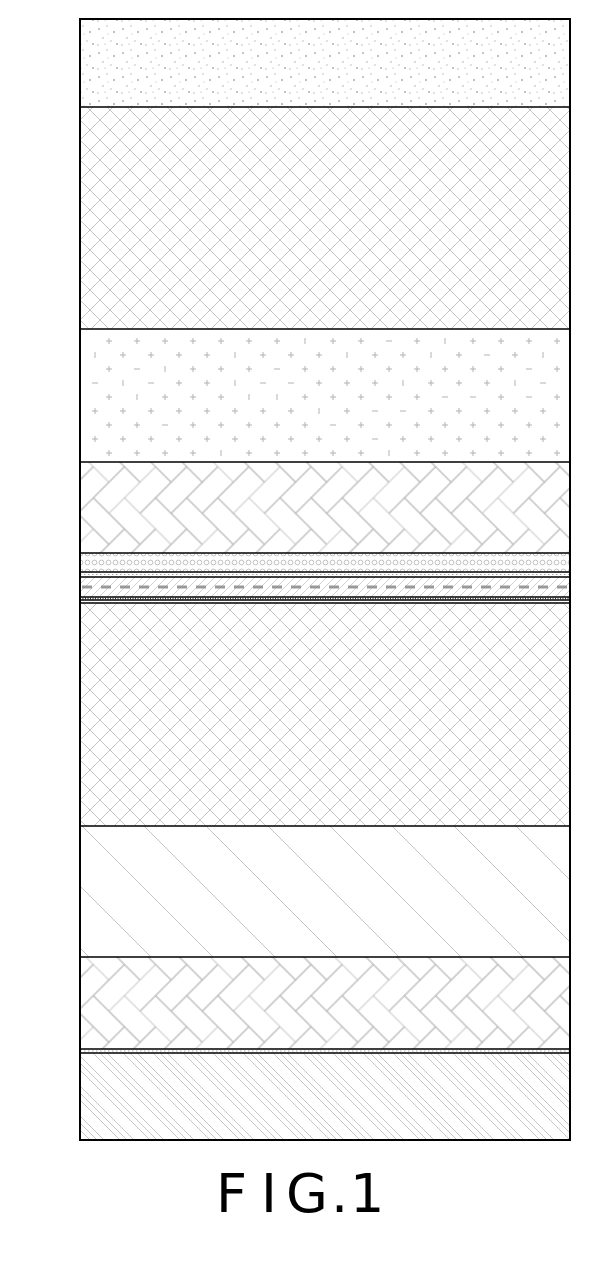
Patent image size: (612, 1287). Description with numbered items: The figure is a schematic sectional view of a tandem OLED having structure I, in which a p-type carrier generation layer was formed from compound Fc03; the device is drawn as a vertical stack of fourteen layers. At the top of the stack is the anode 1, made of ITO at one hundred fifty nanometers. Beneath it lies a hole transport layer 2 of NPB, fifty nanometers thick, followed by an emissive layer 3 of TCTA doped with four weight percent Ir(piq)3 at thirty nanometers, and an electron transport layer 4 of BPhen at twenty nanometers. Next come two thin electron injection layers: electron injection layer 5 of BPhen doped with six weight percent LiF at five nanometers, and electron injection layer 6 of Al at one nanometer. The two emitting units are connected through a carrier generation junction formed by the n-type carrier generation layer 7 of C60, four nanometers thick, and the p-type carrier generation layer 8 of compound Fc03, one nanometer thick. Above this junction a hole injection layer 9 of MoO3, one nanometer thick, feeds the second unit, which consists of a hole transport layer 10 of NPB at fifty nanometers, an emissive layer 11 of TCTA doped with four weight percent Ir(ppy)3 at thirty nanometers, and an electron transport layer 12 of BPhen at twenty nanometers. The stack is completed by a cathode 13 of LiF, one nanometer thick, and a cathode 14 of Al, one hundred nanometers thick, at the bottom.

The anode 1 is at (87, 67).
The hole transport layer 2 is at (87, 238).
The emissive layer 3 is at (88, 403).
The electron transport layer 4 is at (87, 511).
The electron injection layer 5 is at (86, 562).
The electron injection layer 6 is at (86, 575).
The n-type carrier generation layer 7 is at (85, 588).
The p-type carrier generation layer 8 is at (83, 598).
The hole injection layer 9 is at (80, 603).
The hole transport layer 10 is at (88, 703).
The emissive layer 11 is at (88, 878).
The electron transport layer 12 is at (88, 1002).
The cathode 13 is at (87, 1050).
The cathode 14 is at (88, 1097).